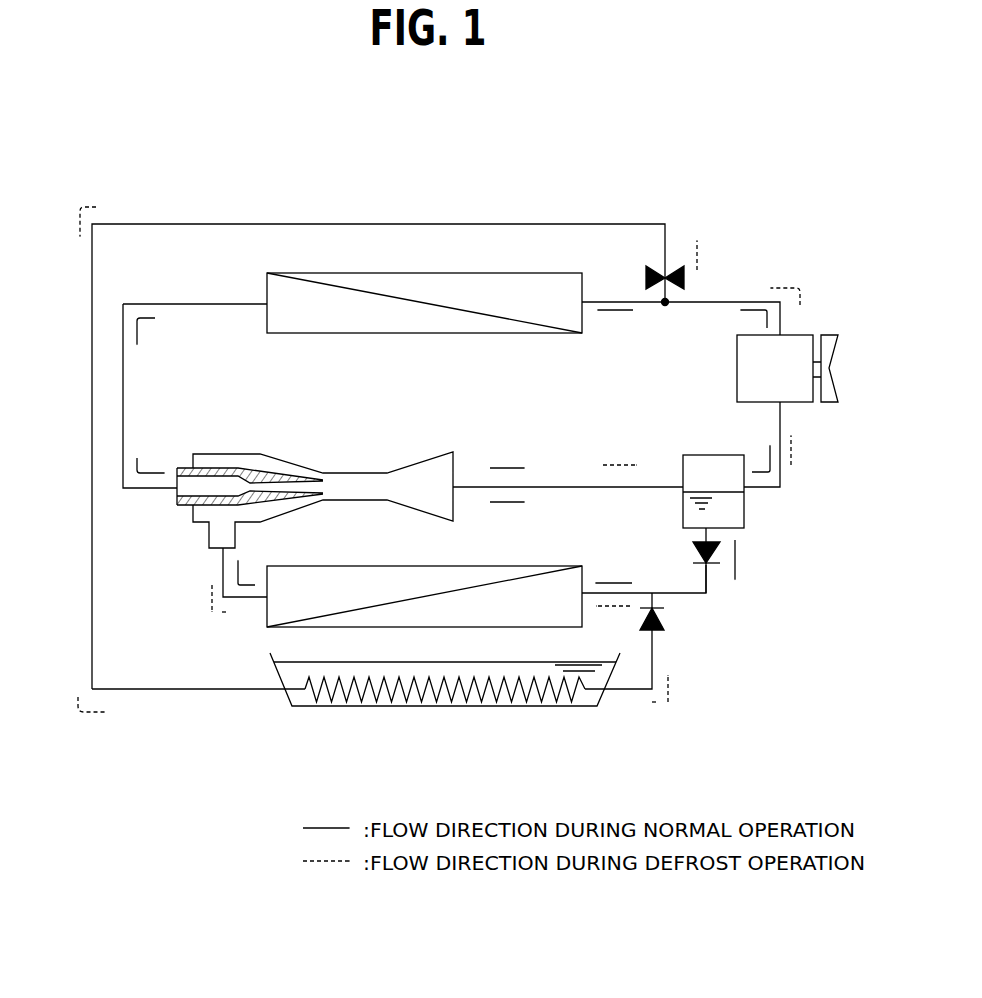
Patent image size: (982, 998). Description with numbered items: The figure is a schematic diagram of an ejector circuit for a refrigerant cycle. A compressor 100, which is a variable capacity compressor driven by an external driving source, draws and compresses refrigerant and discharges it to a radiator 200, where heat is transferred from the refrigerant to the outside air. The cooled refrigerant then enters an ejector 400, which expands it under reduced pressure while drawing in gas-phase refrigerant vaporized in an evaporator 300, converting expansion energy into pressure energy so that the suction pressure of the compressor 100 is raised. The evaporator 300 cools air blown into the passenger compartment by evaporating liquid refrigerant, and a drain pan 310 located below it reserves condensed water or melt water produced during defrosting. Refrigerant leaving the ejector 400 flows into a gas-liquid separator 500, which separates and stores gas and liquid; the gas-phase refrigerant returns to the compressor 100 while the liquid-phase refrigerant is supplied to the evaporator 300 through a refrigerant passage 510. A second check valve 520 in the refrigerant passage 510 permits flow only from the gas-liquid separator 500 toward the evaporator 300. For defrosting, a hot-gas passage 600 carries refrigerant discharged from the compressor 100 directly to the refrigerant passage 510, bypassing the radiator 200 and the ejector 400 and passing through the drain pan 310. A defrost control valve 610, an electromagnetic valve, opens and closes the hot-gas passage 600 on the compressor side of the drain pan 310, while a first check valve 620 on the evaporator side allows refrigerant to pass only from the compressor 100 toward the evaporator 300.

The compressor 100 is at (737, 355).
The radiator 200 is at (440, 273).
The evaporator 300 is at (498, 566).
The drain pan 310 is at (527, 706).
The ejector 400 is at (307, 467).
The gas-liquid separator 500 is at (745, 510).
The refrigerant passage 510 is at (707, 584).
The second check valve 520 is at (694, 554).
The hot-gas passage 600 is at (325, 224).
The defrost control valve 610 is at (647, 275).
The first check valve 620 is at (664, 622).